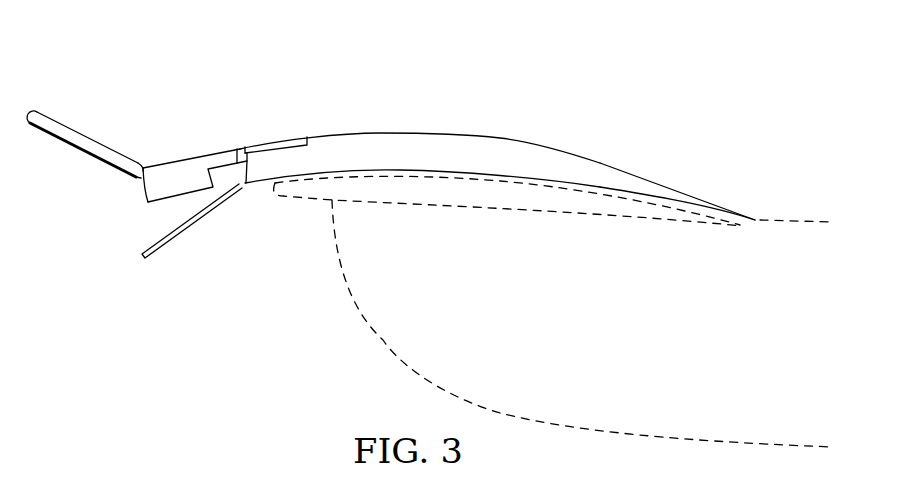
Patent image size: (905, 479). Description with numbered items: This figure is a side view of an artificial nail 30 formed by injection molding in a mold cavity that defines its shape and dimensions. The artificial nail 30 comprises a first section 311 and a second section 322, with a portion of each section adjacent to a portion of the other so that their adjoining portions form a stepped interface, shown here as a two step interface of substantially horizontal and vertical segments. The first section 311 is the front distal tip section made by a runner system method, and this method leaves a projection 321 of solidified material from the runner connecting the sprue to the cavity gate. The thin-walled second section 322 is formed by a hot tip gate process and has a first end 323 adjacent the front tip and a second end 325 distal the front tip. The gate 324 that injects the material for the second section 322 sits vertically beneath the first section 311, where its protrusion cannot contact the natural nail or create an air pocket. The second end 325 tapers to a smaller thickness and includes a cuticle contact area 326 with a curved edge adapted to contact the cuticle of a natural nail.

The artificial nail 30 is at (438, 72).
The first section 311 is at (192, 155).
The projection 321 is at (78, 128).
The second section 322 is at (504, 137).
The first end 323 is at (265, 147).
The gate 324 is at (239, 176).
The second end 325 is at (703, 198).
The cuticle contact area 326 is at (757, 218).